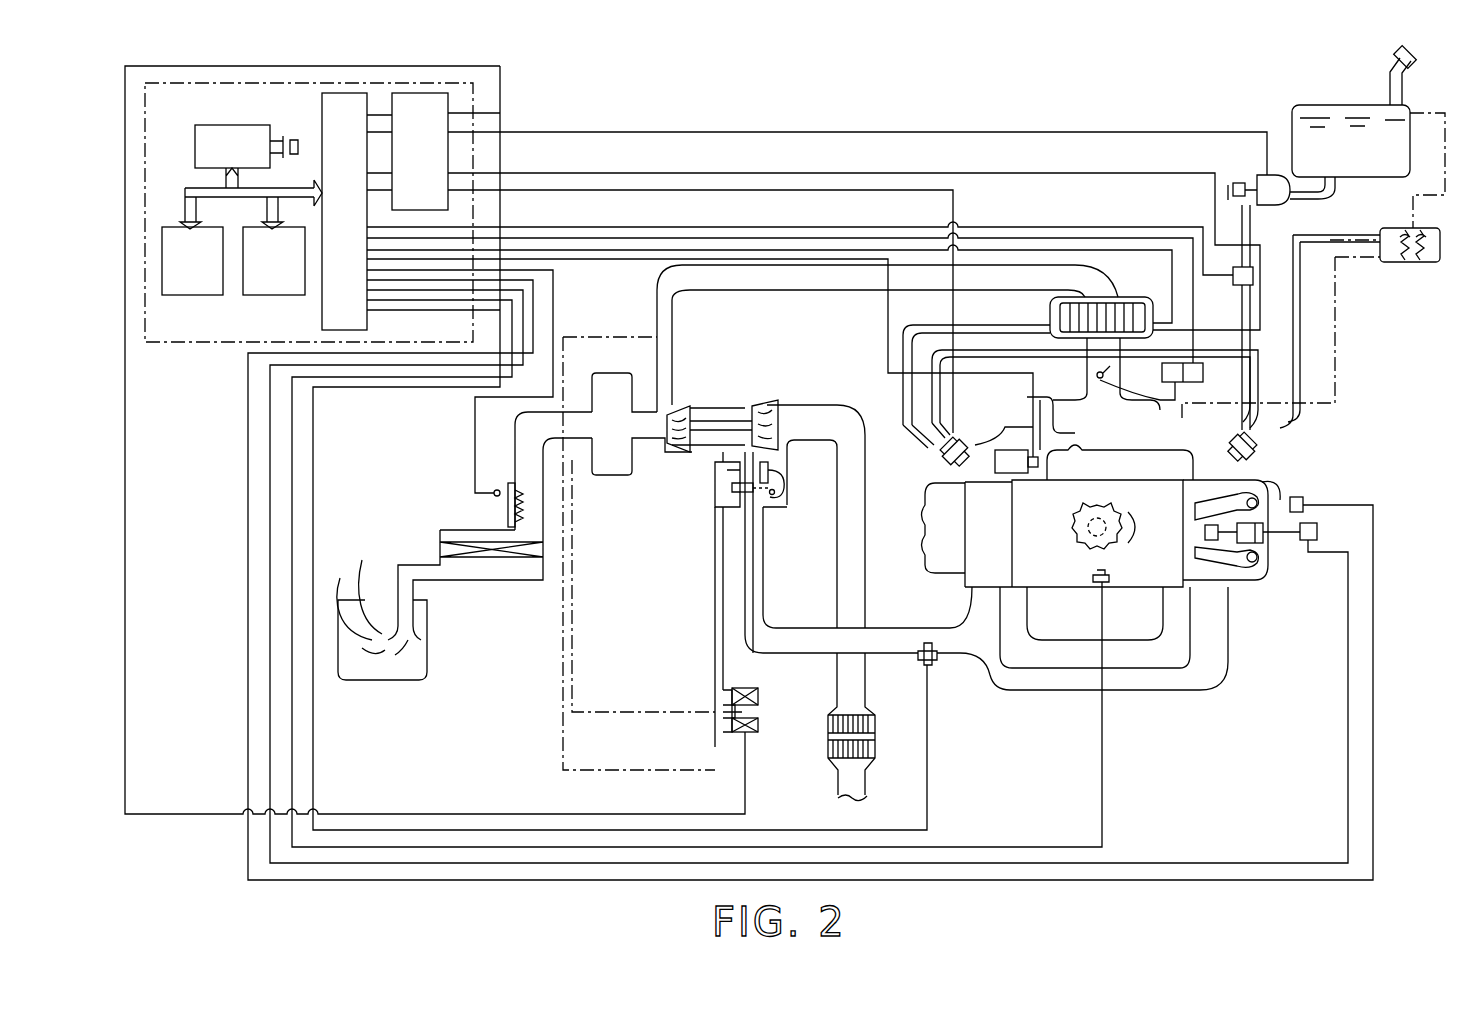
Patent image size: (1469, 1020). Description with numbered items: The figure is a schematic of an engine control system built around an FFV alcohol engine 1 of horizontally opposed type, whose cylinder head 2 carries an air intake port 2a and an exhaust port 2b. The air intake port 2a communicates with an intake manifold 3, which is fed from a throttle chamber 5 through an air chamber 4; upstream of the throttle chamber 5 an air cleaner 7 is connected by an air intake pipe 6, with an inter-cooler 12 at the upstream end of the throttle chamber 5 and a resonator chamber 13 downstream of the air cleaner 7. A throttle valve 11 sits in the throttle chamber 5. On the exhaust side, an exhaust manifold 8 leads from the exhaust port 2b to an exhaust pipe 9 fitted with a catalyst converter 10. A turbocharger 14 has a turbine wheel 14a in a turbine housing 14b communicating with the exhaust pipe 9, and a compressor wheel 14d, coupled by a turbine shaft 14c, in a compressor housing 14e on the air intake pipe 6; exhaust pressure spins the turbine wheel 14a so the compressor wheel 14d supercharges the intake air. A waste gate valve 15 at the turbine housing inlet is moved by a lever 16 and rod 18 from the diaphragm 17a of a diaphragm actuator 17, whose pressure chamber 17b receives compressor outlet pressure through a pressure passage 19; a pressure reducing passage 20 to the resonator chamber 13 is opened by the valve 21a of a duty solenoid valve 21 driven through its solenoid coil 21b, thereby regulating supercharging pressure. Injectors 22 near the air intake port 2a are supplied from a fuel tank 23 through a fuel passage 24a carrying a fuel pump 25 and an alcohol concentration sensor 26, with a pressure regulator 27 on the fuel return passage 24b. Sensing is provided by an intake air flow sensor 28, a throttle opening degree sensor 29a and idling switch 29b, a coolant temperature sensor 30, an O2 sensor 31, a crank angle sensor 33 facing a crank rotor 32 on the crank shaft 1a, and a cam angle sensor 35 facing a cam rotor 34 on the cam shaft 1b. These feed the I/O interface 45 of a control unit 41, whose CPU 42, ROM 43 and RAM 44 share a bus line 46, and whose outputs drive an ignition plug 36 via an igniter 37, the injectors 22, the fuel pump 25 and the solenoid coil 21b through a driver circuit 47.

The FFV alcohol engine 1 is at (1112, 560).
The crank shaft 1a is at (1075, 536).
The cam shaft 1b is at (1268, 495).
The cylinder head 2 is at (1207, 558).
The air intake port 2a is at (1200, 494).
The exhaust port 2b is at (1200, 572).
The intake manifold 3 is at (1006, 440).
The air chamber 4 is at (1048, 400).
The throttle chamber 5 is at (1087, 360).
The air intake pipe 6 is at (836, 290).
The air cleaner 7 is at (493, 583).
The exhaust manifold 8 is at (1163, 700).
The exhaust pipe 9 is at (798, 628).
The catalyst converter 10 is at (875, 735).
The throttle valve 11 is at (1100, 380).
The inter-cooler 12 is at (1138, 297).
The resonator chamber 13 is at (620, 465).
The turbocharger 14 is at (730, 438).
The turbine wheel 14a is at (768, 398).
The turbine housing 14b is at (755, 400).
The turbine shaft 14c is at (723, 424).
The compressor wheel 14d is at (678, 405).
The compressor housing 14e is at (695, 452).
The waste gate valve 15 is at (768, 472).
The lever 16 is at (777, 492).
The diaphragm actuator 17 is at (688, 535).
The diaphragm 17a is at (718, 495).
The pressure chamber 17b is at (724, 524).
The rod 18 is at (748, 495).
The pressure passage 19 is at (712, 645).
The pressure reducing passage 20 is at (575, 625).
The duty solenoid valve 21 is at (733, 720).
The valve 21a is at (716, 701).
The solenoid coil 21b is at (755, 688).
The injector 22 is at (945, 458).
The fuel tank 23 is at (1300, 105).
The fuel passage 24a is at (1252, 218).
The fuel return passage 24b is at (1345, 235).
The fuel pump 25 is at (1263, 175).
The alcohol concentration sensor 26 is at (1233, 282).
The pressure regulator 27 is at (1415, 262).
The intake air flow sensor 28 is at (505, 510).
The throttle opening degree sensor 29a is at (1160, 402).
The idling switch 29b is at (1207, 379).
The coolant temperature sensor 30 is at (1030, 478).
The O2 sensor 31 is at (935, 665).
The crank rotor 32 is at (1130, 527).
The crank angle sensor 33 is at (1074, 572).
The cam rotor 34 is at (1280, 498).
The cam angle sensor 35 is at (1303, 500).
The ignition plug 36 is at (1270, 555).
The igniter 37 is at (1319, 554).
The control unit 41 is at (222, 349).
The CPU 42 is at (210, 124).
The ROM 43 is at (196, 295).
The RAM 44 is at (277, 295).
The I/O interface 45 is at (322, 116).
The bus line 46 is at (185, 200).
The driver circuit 47 is at (448, 152).